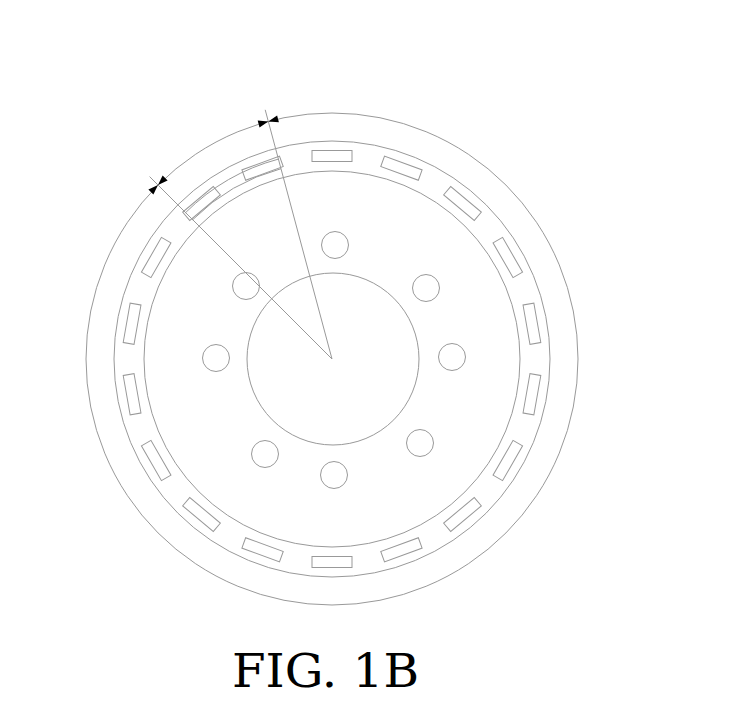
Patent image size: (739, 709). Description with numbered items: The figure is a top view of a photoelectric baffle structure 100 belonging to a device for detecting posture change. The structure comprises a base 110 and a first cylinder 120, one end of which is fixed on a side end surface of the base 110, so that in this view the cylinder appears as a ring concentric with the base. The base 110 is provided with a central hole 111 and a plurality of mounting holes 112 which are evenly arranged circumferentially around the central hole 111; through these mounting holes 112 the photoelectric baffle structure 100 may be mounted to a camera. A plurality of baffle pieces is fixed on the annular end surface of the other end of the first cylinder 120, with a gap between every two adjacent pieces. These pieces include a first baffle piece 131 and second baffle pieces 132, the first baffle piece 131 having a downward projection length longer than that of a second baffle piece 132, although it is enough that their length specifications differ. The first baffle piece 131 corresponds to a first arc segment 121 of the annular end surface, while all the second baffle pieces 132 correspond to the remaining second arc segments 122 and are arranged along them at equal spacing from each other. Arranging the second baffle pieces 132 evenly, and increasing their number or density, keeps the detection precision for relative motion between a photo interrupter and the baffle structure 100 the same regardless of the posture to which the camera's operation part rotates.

The photoelectric baffle structure 100 is at (153, 52).
The base 110 is at (457, 273).
The central hole 111 is at (296, 382).
The mounting holes 112 is at (330, 468).
The first cylinder 120 is at (535, 363).
The first arc segment 121 is at (240, 234).
The second arc segments 122 is at (315, 359).
The first baffle piece 131 is at (210, 193).
The second baffle pieces 132 is at (332, 157).